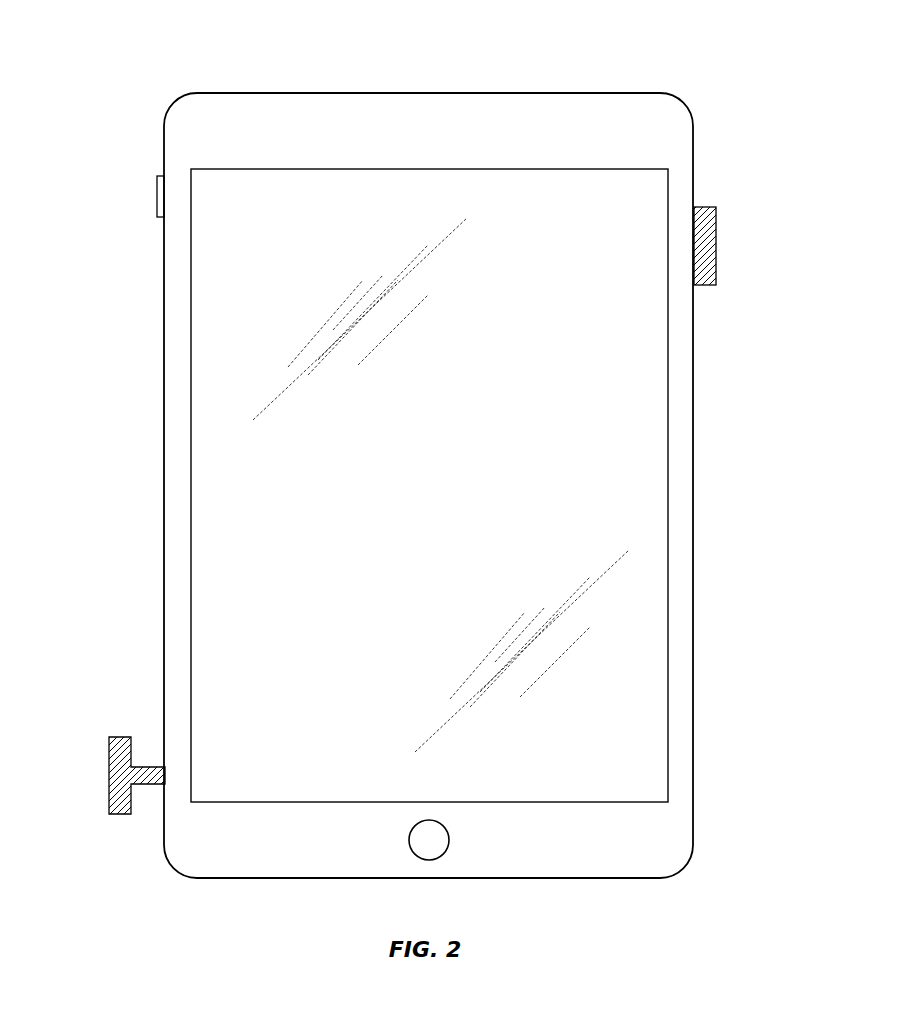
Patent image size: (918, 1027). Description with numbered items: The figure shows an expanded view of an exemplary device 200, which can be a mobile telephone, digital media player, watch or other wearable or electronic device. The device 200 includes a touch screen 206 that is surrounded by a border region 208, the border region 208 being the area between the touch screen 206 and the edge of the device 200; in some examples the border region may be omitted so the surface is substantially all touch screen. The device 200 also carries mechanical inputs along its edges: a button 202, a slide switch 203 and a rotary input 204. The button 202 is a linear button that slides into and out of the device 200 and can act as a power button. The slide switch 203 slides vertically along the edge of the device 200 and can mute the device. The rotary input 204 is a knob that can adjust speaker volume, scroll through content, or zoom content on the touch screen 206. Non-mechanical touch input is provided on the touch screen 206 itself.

The device 200 is at (176, 33).
The button 202 is at (717, 245).
The slide switch 203 is at (156, 199).
The rotary input 204 is at (121, 737).
The touch screen 206 is at (206, 348).
The border region 208 is at (681, 738).